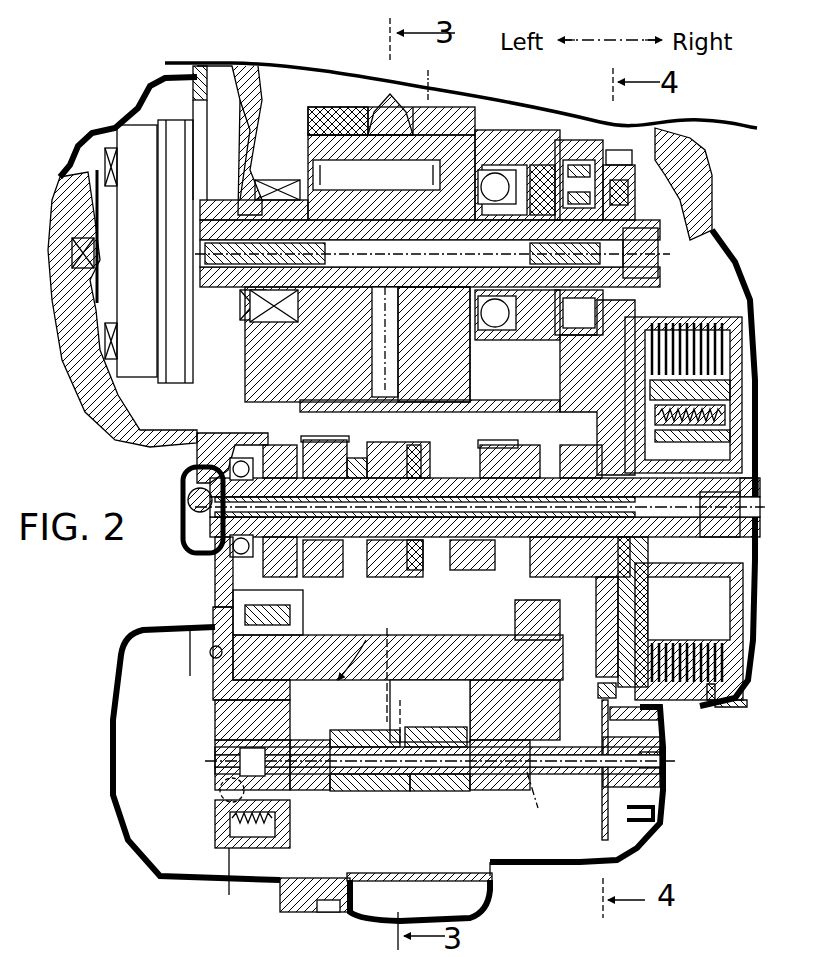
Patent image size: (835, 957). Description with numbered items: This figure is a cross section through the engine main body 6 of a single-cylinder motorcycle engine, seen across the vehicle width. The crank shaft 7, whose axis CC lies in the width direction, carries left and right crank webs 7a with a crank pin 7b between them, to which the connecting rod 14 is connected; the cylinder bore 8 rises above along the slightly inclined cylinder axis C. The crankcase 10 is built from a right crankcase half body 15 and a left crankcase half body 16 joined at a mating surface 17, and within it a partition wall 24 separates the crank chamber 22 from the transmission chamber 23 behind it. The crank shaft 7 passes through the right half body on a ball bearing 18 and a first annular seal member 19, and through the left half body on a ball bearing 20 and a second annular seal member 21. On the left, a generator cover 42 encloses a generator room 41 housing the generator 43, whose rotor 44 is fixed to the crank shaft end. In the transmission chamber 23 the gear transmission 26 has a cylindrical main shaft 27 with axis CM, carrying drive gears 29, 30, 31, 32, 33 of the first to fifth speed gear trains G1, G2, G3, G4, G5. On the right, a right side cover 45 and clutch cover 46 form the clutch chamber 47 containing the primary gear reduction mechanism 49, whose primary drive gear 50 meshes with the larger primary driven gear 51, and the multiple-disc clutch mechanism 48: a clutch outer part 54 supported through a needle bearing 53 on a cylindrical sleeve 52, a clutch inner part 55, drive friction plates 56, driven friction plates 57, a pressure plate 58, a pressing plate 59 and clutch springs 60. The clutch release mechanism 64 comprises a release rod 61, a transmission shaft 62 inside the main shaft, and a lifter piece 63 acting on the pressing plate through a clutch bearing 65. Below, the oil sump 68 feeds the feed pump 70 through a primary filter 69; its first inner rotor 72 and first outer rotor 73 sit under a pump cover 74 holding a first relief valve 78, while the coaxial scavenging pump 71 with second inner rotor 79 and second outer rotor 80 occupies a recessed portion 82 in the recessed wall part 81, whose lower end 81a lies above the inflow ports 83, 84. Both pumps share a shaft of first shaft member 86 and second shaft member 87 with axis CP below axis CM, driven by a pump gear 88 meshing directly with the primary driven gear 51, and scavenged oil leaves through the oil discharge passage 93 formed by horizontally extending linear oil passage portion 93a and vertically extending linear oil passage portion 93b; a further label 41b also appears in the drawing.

The generator room 41 is at (162, 95).
The cylinder bore 8 is at (250, 78).
The generator 43 is at (137, 118).
The rotor 44 is at (172, 373).
The generator cover 42 is at (80, 385).
The crank shaft 7 is at (452, 102).
The crank pin 7b is at (327, 106).
The connecting rod 14 is at (380, 100).
The cylinder axis C is at (428, 77).
The ball bearing 20 is at (288, 168).
The ball bearing 18 is at (497, 172).
The first annular seal member 19 is at (555, 165).
The primary gear reduction mechanism 49 is at (617, 165).
The primary drive gear 50 is at (622, 183).
The clutch cover 46 is at (725, 302).
The second annular seal member 21 is at (246, 312).
The axis of the crank shaft CC is at (357, 344).
The crank chamber 22 is at (400, 358).
The partition wall 24 is at (417, 403).
The third speed gear train G3 is at (386, 437).
The crank webs 7a is at (286, 378).
The left crankcase half body 16 is at (262, 418).
The drive friction plates 56 is at (667, 340).
The pressing plate 59 is at (738, 352).
The clutch springs 60 is at (736, 392).
The clutch release mechanism 64 is at (736, 442).
The clutch bearing 65 is at (758, 488).
The axis of the main shaft CM is at (200, 512).
The release rod 61 is at (195, 476).
The fourth speed gear train G4 is at (318, 442).
The main shaft 27 is at (358, 470).
The drive gear 31 is at (398, 448).
The drive gear 33 is at (483, 452).
The cylindrical sleeve 52 is at (576, 446).
The drive gear 30 is at (230, 563).
The second speed gear train G2 is at (250, 577).
The engine main body 6 is at (212, 568).
The drive gear 32 is at (327, 582).
The transmission shaft 62 is at (432, 570).
The drive gear 29 is at (503, 570).
The first speed gear train G1 is at (515, 580).
The lifter piece 63 is at (703, 540).
The primary driven gear 51 is at (632, 600).
The needle bearing 53 is at (592, 600).
The clutch inner part 55 is at (688, 643).
The pressure plate 58 is at (616, 700).
The clutch outer part 54 is at (672, 720).
The driven friction plates 57 is at (720, 708).
The clutch mechanism 48 is at (664, 748).
The second shaft member 87 is at (600, 783).
The horizontally extending linear oil passage portion 93a is at (228, 688).
The vertically extending linear oil passage portion 93b is at (214, 654).
The motor housing lower 41b is at (164, 693).
The transmission chamber 23 is at (352, 636).
The oil discharge passage 93 is at (360, 646).
The mating surface 17 is at (387, 632).
The right crankcase half body 15 is at (516, 632).
The gear transmission 26 is at (498, 645).
The crankcase 10 is at (488, 678).
The fifth speed gear train G5 is at (462, 600).
The second outer rotor 80 is at (430, 712).
The scavenging pump 71 is at (432, 727).
The clutch chamber 47 is at (578, 739).
The recessed portion 82 is at (362, 736).
The first shaft member 86 is at (330, 778).
The second inner rotor 79 is at (413, 792).
The lower end 81a is at (440, 793).
The recessed wall part 81 is at (472, 790).
The axis of the pump shaft CP is at (542, 804).
The feed pump 70 is at (246, 720).
The pump cover 74 is at (214, 754).
The first inner rotor 72 is at (220, 776).
The first outer rotor 73 is at (218, 812).
The first relief valve 78 is at (230, 883).
The inflow port 83 is at (212, 868).
The primary filter 69 is at (268, 865).
The oil sump 68 is at (446, 892).
The inflow port 84 is at (505, 862).
The pump gear 88 is at (586, 862).
The right side cover 45 is at (640, 851).